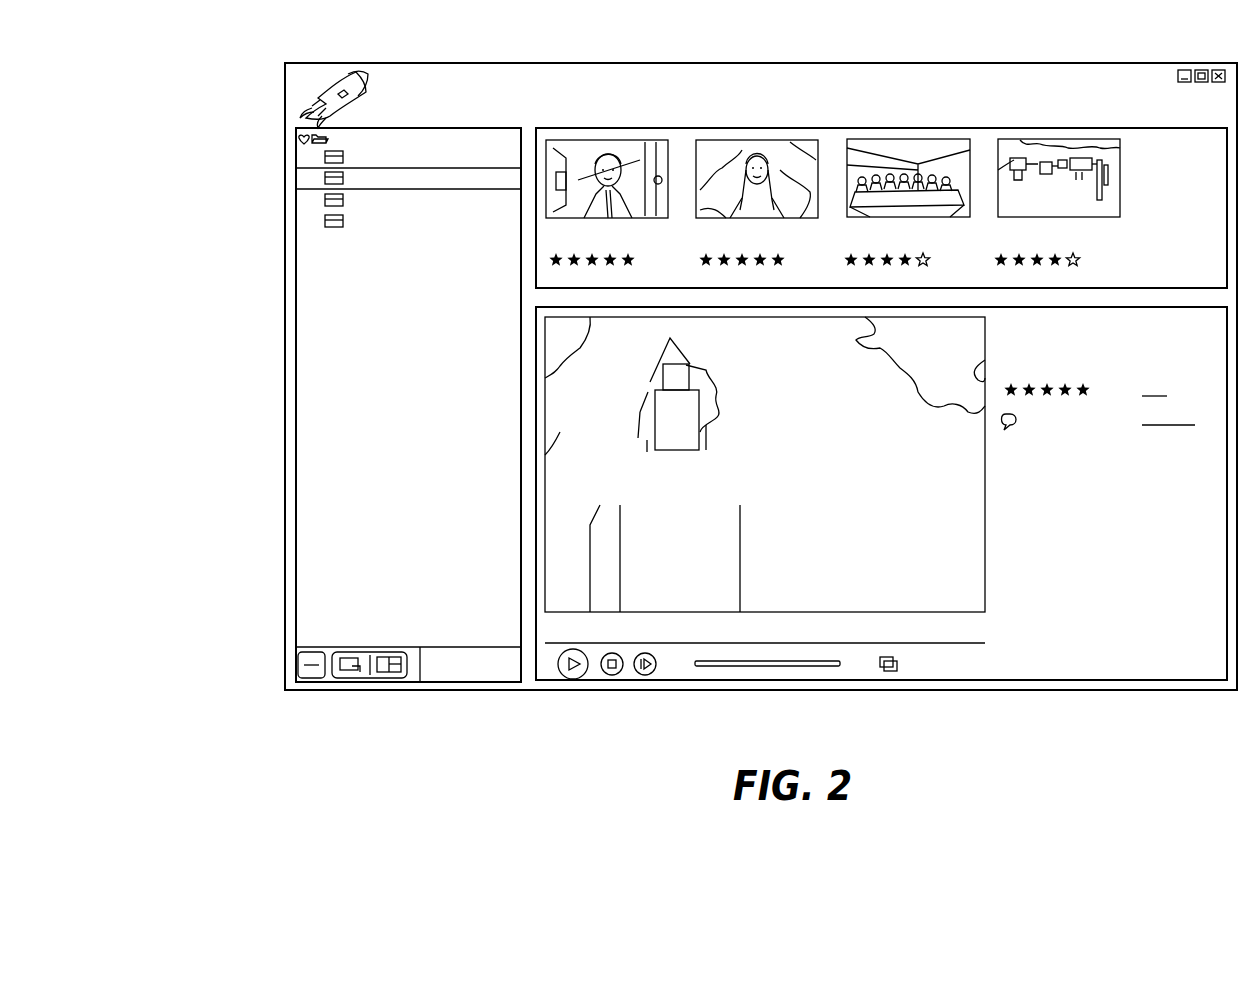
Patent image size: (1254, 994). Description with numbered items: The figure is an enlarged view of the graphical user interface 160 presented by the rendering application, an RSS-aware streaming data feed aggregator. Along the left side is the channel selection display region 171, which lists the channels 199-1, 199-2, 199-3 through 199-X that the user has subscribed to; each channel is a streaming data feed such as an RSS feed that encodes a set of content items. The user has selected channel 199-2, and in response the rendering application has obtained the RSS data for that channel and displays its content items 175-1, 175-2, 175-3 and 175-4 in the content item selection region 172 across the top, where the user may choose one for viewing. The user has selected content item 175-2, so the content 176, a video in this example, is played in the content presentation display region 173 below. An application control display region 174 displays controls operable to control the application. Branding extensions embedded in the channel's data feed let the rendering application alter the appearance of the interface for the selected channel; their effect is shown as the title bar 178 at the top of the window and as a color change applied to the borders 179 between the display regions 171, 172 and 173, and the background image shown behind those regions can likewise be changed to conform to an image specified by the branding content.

The graphical user interface 160 is at (461, 690).
The channel selection display region 171 is at (314, 394).
The content item selection region 172 is at (881, 146).
The content presentation display region 173 is at (821, 546).
The application control display region 174 is at (663, 672).
The content item 175-1 is at (620, 140).
The content item 175-2 is at (760, 140).
The content item 175-3 is at (922, 140).
The content item 175-4 is at (1068, 140).
The content 176 is at (700, 464).
The title bar 178 is at (1161, 113).
The borders 179 is at (548, 458).
The channel 199-1 is at (322, 157).
The channel 199-2 is at (322, 178).
The channel 199-3 is at (322, 198).
The channel 199-X is at (322, 218).